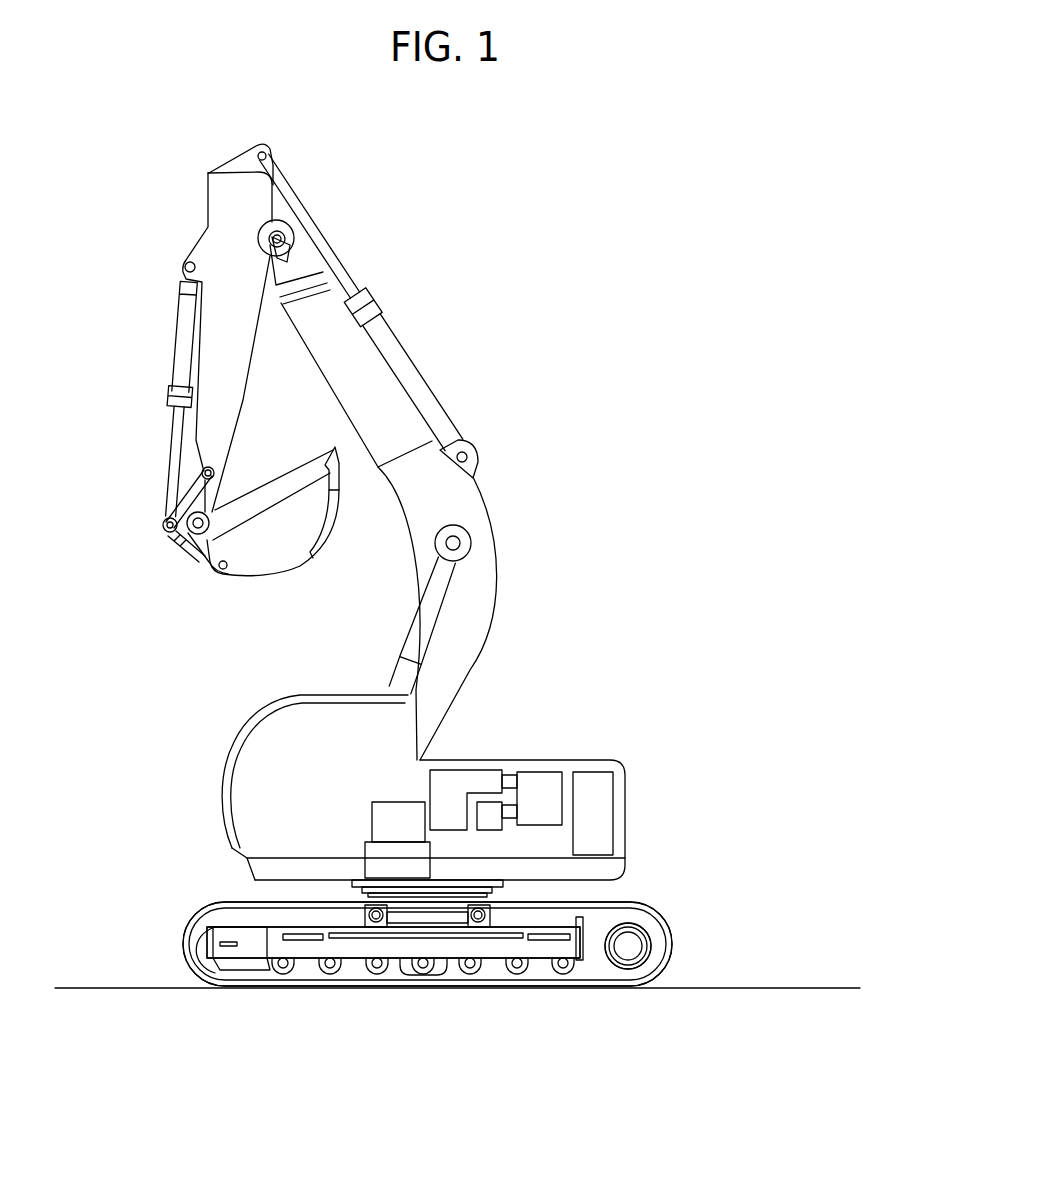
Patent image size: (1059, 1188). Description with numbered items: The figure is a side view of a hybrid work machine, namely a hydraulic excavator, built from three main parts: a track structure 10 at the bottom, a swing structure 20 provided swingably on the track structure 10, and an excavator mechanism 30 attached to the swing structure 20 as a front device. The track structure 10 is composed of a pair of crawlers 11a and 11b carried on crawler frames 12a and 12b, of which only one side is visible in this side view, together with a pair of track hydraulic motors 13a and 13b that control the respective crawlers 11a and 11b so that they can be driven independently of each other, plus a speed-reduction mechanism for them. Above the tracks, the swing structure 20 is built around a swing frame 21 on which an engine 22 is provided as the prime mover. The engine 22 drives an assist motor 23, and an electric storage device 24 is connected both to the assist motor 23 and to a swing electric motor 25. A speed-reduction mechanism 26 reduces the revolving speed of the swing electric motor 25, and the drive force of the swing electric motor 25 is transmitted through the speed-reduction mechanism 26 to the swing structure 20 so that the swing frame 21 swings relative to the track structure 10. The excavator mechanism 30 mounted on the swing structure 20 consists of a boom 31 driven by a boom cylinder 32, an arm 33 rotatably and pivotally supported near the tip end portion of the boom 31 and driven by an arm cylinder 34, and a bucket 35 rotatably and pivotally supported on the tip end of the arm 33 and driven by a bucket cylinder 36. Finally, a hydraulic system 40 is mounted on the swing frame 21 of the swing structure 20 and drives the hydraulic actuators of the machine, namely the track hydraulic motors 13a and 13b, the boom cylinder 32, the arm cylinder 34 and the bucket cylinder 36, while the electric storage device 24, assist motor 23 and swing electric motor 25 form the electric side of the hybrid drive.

The track structure 10 is at (472, 941).
The crawler 11a is at (665, 920).
The crawler 11b is at (427, 944).
The crawler frame 12a is at (398, 943).
The crawler frame 12b is at (393, 942).
The track hydraulic motor 13a is at (628, 945).
The track hydraulic motor 13b is at (628, 946).
The swing structure 20 is at (232, 720).
The swing frame 21 is at (623, 870).
The engine 22 is at (540, 780).
The assist motor 23 is at (492, 818).
The electric storage device 24 is at (600, 808).
The swing electric motor 25 is at (383, 818).
The speed-reduction mechanism 26 is at (383, 853).
The excavator mechanism 30 is at (420, 265).
The boom 31 is at (488, 571).
The boom cylinder 32 is at (413, 643).
The arm 33 is at (240, 207).
The arm cylinder 34 is at (418, 385).
The bucket 35 is at (285, 555).
The bucket cylinder 36 is at (183, 343).
The hydraulic system 40 is at (468, 770).